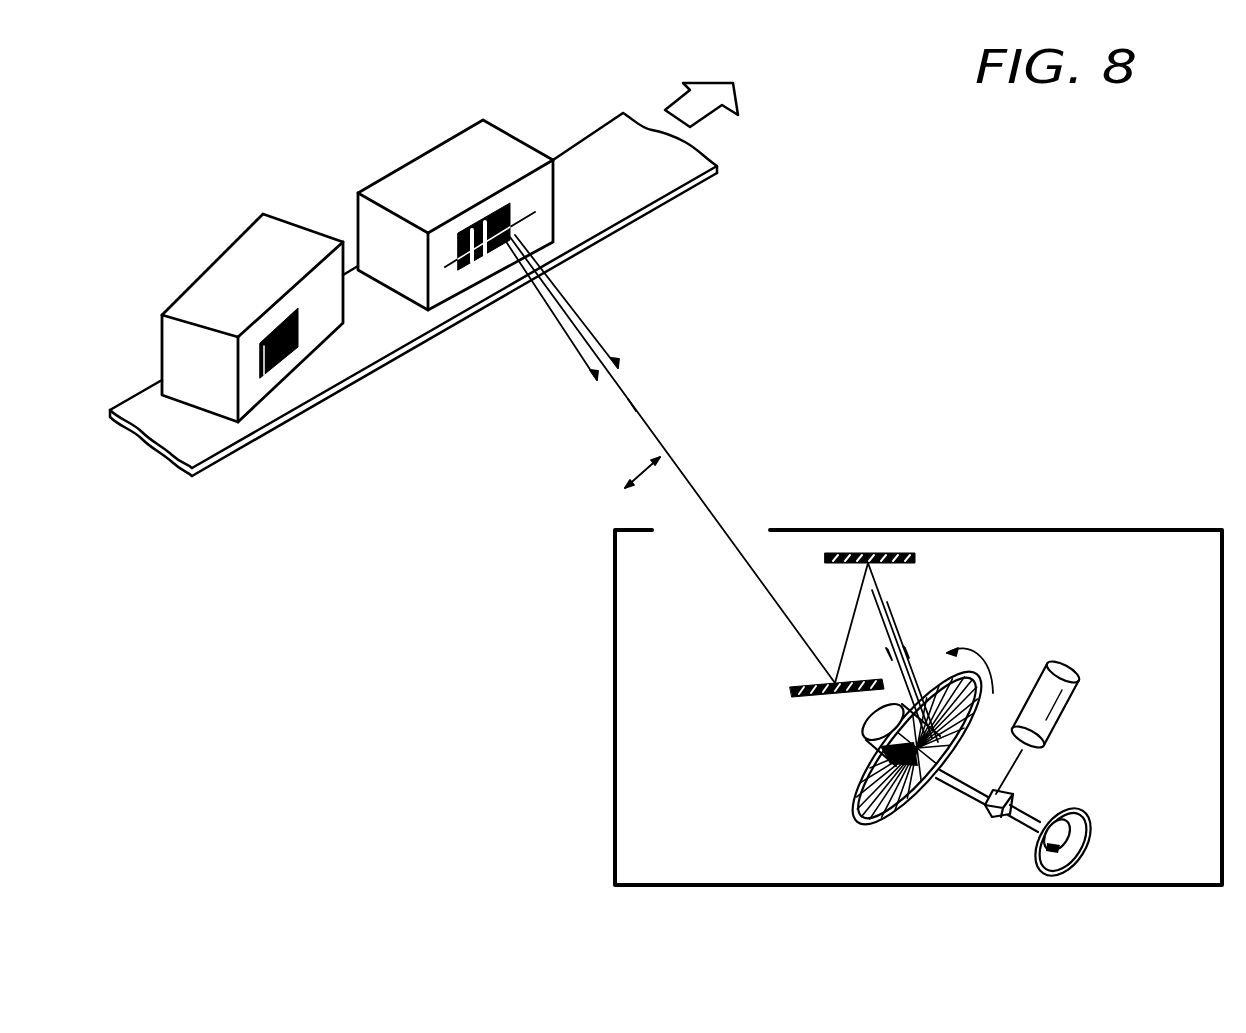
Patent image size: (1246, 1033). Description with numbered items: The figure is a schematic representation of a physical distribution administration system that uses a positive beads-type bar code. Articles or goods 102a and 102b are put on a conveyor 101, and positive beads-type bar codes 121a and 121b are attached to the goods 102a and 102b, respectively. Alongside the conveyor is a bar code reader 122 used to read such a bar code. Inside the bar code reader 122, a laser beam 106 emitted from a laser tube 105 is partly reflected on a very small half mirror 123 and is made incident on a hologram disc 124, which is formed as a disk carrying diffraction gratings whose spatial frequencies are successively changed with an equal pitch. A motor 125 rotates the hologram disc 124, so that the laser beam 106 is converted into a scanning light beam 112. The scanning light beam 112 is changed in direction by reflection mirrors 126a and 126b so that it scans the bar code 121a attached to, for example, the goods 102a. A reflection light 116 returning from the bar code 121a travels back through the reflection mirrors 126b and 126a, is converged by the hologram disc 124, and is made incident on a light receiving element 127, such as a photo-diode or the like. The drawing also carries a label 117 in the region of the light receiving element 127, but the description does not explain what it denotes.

The conveyor 101 is at (590, 135).
The goods 102a is at (443, 142).
The goods 102b is at (250, 226).
The positive beads-type bar code 121a is at (508, 207).
The positive beads-type bar code 121b is at (288, 353).
The scanning light beam 112 is at (657, 436).
The reflection light 116 is at (600, 345).
The bar code reader 122 is at (973, 530).
The reflection mirror 126a is at (912, 553).
The reflection mirror 126b is at (802, 688).
The hologram disc 124 is at (870, 817).
The motor 125 is at (865, 727).
The laser tube 105 is at (1046, 662).
The laser beam 106 is at (1018, 783).
The half mirror 123 is at (987, 803).
The light receiving path 117 is at (1043, 815).
The light receiving element 127 is at (1088, 848).